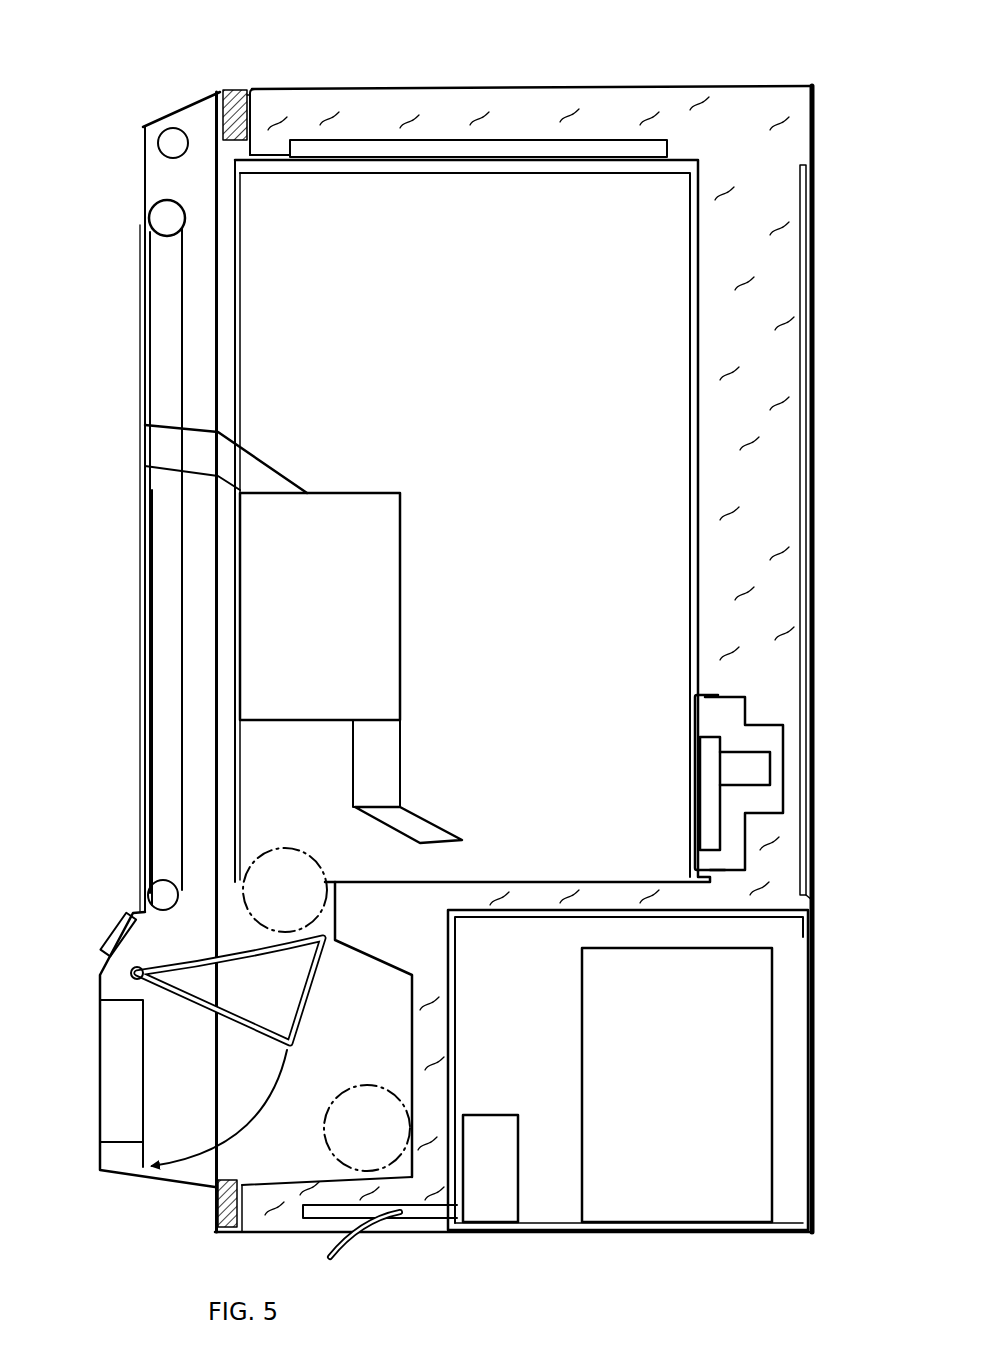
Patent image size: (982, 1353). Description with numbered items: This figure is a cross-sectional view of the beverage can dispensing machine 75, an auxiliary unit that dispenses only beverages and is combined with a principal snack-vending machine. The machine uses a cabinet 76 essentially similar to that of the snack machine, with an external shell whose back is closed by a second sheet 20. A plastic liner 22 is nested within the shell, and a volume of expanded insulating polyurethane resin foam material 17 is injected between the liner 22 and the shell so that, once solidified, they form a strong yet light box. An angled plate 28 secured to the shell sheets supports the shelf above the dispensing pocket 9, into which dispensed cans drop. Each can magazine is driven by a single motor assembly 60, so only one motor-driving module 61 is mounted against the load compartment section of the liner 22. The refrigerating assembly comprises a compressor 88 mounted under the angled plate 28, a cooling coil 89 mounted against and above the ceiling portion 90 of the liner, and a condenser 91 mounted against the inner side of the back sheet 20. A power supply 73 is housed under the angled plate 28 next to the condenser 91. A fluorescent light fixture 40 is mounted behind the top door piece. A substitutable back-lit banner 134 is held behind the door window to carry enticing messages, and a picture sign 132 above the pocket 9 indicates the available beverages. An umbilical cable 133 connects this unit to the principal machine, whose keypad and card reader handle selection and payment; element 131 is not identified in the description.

The beverage can dispensing machine 75 is at (764, 48).
The second sheet 20 is at (815, 135).
The cabinet 76 is at (430, 88).
The ceiling portion 90 is at (280, 150).
The cooling coil 89 is at (668, 145).
The plastic liner 22 is at (695, 435).
The insulating polyurethane resin foam material 17 is at (780, 522).
The condenser 91 is at (800, 225).
The fluorescent light fixture 40 is at (170, 124).
The belt 131 is at (182, 240).
The back-lit banner 134 is at (142, 548).
The dispensing pocket 9 is at (303, 801).
The picture sign 132 is at (110, 935).
The umbilical cable 133 is at (350, 1258).
The motor-driving module 61 is at (692, 712).
The motor assembly 60 is at (745, 765).
The angled plate 28 is at (515, 920).
The compressor 88 is at (582, 962).
The power supply 73 is at (520, 1115).